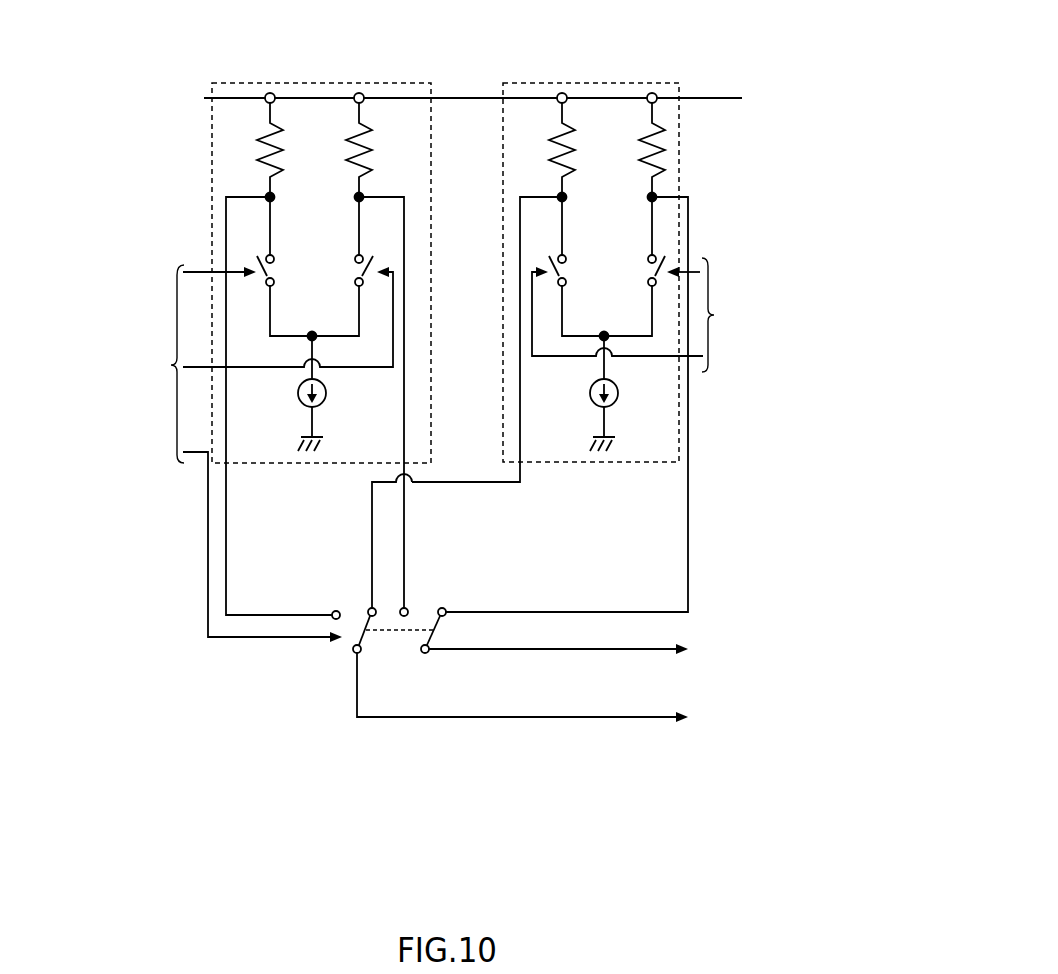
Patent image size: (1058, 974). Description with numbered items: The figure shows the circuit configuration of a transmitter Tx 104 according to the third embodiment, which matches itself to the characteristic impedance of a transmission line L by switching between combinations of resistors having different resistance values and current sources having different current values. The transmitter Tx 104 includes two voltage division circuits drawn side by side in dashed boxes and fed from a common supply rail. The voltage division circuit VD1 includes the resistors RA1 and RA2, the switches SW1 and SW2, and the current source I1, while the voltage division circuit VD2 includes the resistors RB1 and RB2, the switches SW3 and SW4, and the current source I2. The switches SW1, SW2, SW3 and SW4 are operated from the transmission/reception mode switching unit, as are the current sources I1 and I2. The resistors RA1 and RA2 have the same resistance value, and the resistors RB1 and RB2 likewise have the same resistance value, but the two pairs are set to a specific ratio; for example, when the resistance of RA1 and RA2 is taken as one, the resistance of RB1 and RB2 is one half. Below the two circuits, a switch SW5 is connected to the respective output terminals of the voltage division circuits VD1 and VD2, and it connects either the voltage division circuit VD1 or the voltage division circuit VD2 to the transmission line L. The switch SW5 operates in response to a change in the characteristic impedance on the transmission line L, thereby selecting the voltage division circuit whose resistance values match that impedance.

The transmitter Tx 104 is at (435, 46).
The voltage division circuit VD1 is at (241, 84).
The voltage division circuit VD2 is at (520, 84).
The resistor RA1 is at (251, 145).
The resistor RA2 is at (339, 145).
The resistor RB1 is at (543, 145).
The resistor RB2 is at (633, 145).
The switch SW1 is at (286, 273).
The switch SW2 is at (345, 263).
The switch SW3 is at (578, 273).
The switch SW4 is at (639, 263).
The switch SW5 is at (389, 632).
The current source I1 is at (323, 393).
The current source I2 is at (615, 393).